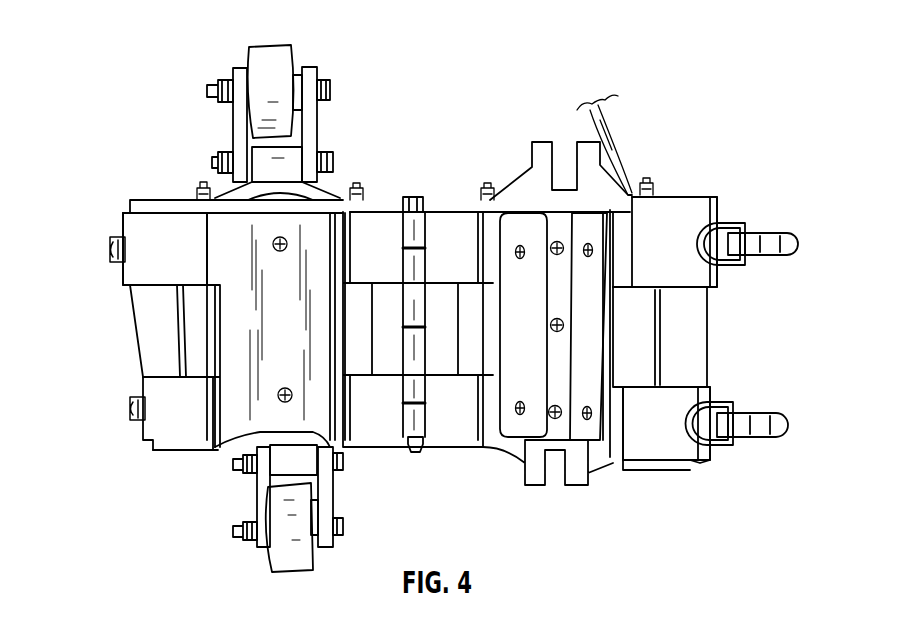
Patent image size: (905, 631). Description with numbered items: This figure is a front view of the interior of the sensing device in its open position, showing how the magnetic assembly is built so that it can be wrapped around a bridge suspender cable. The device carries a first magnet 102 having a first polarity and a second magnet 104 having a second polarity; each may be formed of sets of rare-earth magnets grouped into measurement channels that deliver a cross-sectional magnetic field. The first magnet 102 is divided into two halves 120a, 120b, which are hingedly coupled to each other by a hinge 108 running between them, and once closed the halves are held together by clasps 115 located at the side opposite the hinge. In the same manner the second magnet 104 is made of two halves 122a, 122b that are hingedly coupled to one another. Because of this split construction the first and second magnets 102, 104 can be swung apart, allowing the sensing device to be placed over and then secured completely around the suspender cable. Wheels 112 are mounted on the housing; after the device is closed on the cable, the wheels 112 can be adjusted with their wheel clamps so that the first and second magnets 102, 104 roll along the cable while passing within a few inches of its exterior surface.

The first magnet 102 is at (92, 250).
The second magnet 104 is at (100, 408).
The hinge 108 is at (410, 197).
The wheels 112 is at (263, 52).
The clasps 115 is at (773, 420).
The first half of first magnet 120a is at (205, 245).
The second half of first magnet 120b is at (627, 230).
The first half of second magnet 122a is at (178, 394).
The second half of second magnet 122b is at (688, 388).